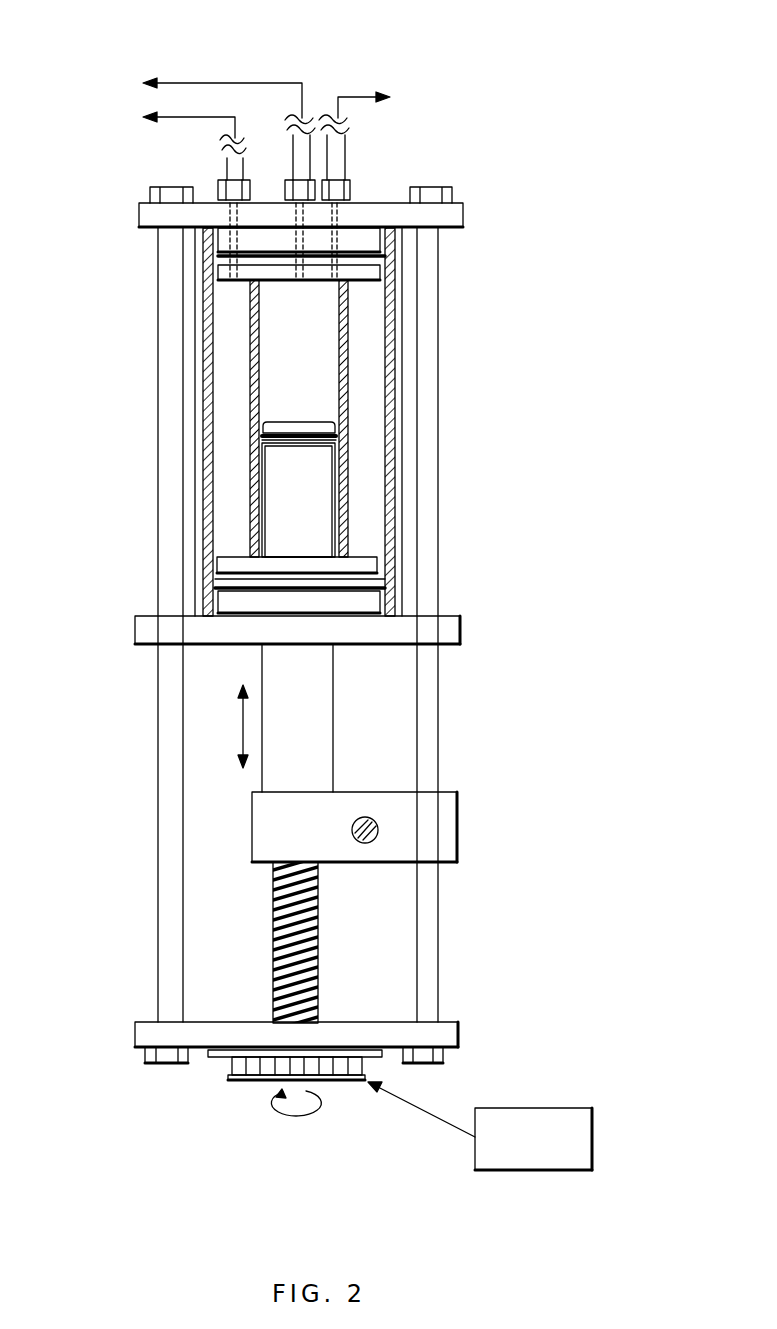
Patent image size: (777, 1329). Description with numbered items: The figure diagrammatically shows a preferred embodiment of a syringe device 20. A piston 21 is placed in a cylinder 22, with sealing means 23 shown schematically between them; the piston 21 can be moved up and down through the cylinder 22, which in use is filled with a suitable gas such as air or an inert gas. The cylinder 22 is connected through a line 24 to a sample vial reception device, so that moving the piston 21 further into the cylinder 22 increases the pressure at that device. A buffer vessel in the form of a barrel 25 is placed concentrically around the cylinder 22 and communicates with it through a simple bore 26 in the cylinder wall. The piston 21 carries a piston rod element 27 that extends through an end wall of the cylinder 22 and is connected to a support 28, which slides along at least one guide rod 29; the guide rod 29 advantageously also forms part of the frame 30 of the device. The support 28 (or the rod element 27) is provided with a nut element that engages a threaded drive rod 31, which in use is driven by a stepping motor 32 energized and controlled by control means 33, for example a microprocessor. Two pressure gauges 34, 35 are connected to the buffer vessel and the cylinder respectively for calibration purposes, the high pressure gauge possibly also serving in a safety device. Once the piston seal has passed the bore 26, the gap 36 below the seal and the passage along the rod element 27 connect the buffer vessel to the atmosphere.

The syringe device 20 is at (92, 613).
The piston 21 is at (310, 490).
The cylinder 22 is at (347, 520).
The sealing means 23 is at (350, 432).
The line 24 is at (263, 83).
The barrel 25 is at (393, 467).
The bore 26 is at (366, 356).
The piston rod element 27 is at (313, 708).
The support 28 is at (437, 828).
The guide rod 29 is at (162, 903).
The frame 30 is at (468, 630).
The threaded drive rod 31 is at (313, 930).
The stepping motor 32 is at (245, 1065).
The control means 33 is at (573, 1142).
The pressure gauge 34 is at (230, 168).
The pressure gauge 35 is at (338, 163).
The chamber 36 is at (240, 482).